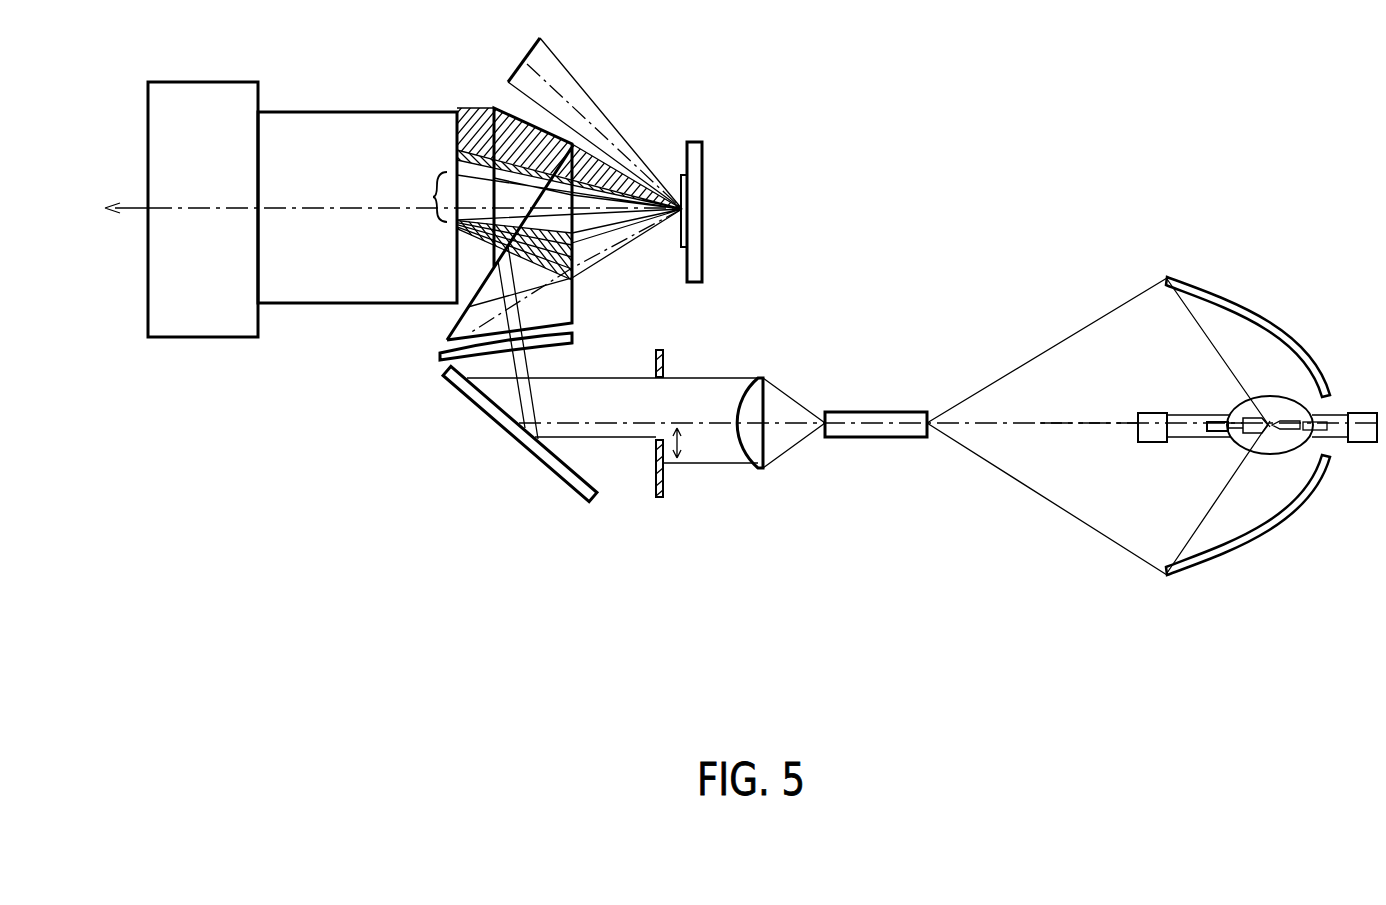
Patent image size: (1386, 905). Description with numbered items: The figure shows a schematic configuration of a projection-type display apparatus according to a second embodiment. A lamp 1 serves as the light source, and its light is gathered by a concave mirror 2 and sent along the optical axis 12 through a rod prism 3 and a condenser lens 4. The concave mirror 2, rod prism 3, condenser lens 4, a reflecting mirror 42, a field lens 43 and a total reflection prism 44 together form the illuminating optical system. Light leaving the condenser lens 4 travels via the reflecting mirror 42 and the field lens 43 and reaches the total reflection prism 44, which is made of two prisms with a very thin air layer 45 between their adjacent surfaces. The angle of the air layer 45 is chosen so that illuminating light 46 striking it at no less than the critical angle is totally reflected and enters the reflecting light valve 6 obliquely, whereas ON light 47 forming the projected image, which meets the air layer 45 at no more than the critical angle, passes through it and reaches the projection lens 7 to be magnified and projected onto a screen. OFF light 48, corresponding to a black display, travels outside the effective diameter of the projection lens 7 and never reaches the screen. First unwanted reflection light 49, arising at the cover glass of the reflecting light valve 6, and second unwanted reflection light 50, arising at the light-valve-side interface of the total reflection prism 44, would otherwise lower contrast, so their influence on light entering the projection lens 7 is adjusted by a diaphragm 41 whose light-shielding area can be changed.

The lamp 1 is at (1280, 408).
The concave mirror 2 is at (1260, 545).
The rod prism 3 is at (877, 435).
The condenser lens 4 is at (758, 457).
The reflecting light valve 6 is at (695, 163).
The projection lens 7 is at (297, 280).
The optical axis 12 is at (1085, 430).
The diaphragm 41 is at (658, 497).
The reflecting mirror 42 is at (543, 458).
The field lens 43 is at (440, 362).
The total reflection prism 44 is at (557, 307).
The air layer 45 is at (493, 176).
The illuminating light 46 is at (613, 245).
The ON light 47 is at (435, 197).
The OFF light 48 is at (530, 24).
The first unwanted reflection light 49 is at (458, 107).
The second unwanted reflection light 50 is at (465, 228).